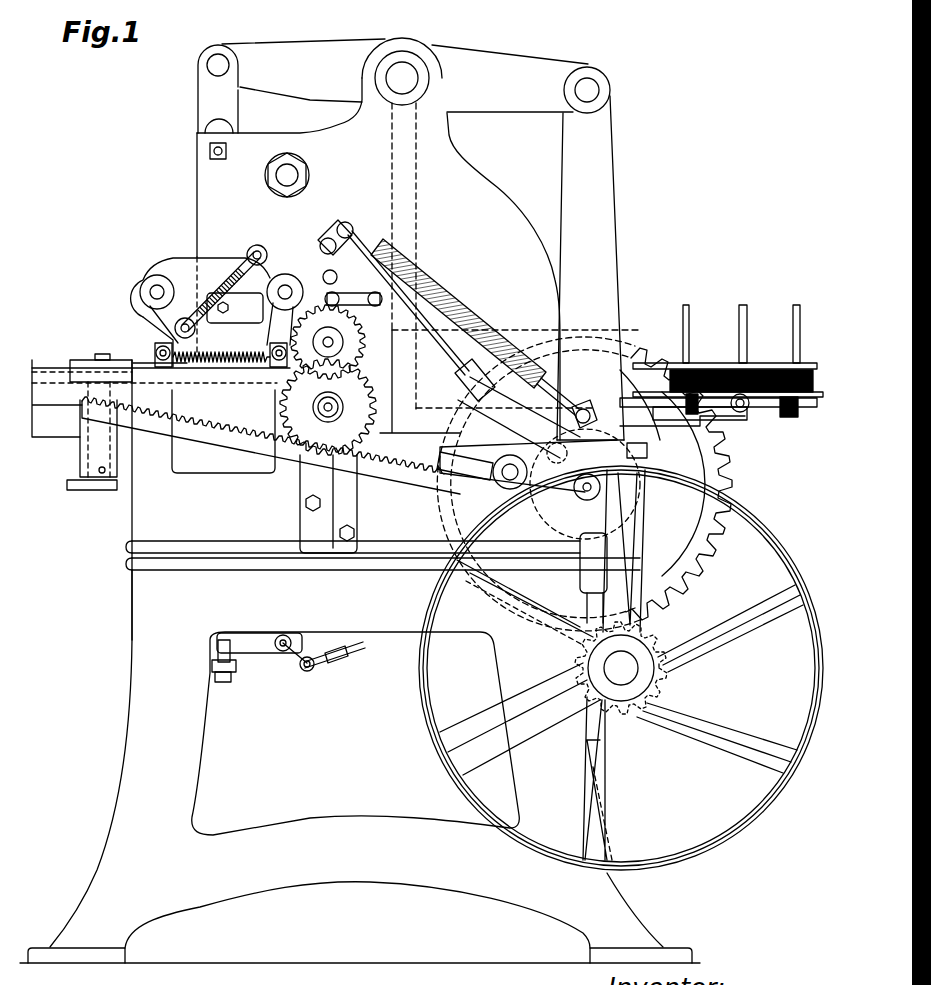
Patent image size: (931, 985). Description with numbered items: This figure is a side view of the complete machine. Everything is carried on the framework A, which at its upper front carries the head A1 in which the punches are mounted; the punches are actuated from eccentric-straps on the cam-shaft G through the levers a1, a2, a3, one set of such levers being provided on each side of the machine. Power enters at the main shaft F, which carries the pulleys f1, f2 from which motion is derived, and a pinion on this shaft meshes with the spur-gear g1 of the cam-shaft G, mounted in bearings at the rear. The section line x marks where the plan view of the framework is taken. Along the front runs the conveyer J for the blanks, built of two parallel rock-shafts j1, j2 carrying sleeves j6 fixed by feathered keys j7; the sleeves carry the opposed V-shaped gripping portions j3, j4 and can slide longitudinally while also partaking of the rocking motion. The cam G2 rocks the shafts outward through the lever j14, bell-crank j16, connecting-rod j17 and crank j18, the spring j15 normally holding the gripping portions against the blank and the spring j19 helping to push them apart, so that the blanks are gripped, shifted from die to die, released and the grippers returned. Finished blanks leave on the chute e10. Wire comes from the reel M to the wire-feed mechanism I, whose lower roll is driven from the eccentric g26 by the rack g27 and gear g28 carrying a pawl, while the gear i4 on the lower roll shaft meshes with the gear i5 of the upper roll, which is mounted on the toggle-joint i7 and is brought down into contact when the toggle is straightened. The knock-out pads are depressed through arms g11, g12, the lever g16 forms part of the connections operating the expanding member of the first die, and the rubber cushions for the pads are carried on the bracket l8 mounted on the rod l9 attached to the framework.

The framework A is at (503, 196).
The head A1 is at (265, 177).
The lever a1 is at (607, 220).
The lever a2 is at (510, 60).
The lever a3 is at (205, 110).
The reel of wire M is at (712, 330).
The conveyer J is at (183, 262).
The rock-shaft j1 is at (152, 293).
The rock-shaft j2 is at (262, 356).
The gripping portion j3 is at (172, 372).
The gripping portion j4 is at (262, 372).
The sleeve j6 is at (147, 283).
The feathered key j7 is at (172, 320).
The lever j14 is at (455, 385).
The spring j15 is at (487, 330).
The bell-crank j16 is at (335, 235).
The connecting-rod j17 is at (228, 278).
The crank j18 is at (147, 330).
The spring j19 is at (222, 400).
The gear i4 is at (262, 420).
The gear i5 is at (340, 342).
The toggle-joint i7 is at (350, 262).
The wire-feed mechanism I is at (397, 302).
The section line x is at (510, 330).
The chute e10 is at (207, 470).
The spur-gear g1 is at (732, 488).
The arm g11 is at (357, 653).
The arm g12 is at (300, 665).
The lever g16 is at (266, 635).
The eccentric g26 is at (545, 505).
The rack g27 is at (402, 462).
The gear g28 is at (360, 400).
The cam-shaft G is at (632, 515).
The cam G2 is at (462, 518).
The main shaft F is at (630, 667).
The pulley f1 is at (748, 597).
The pulley f2 is at (787, 603).
The bracket l8 is at (231, 680).
The rod l9 is at (212, 655).